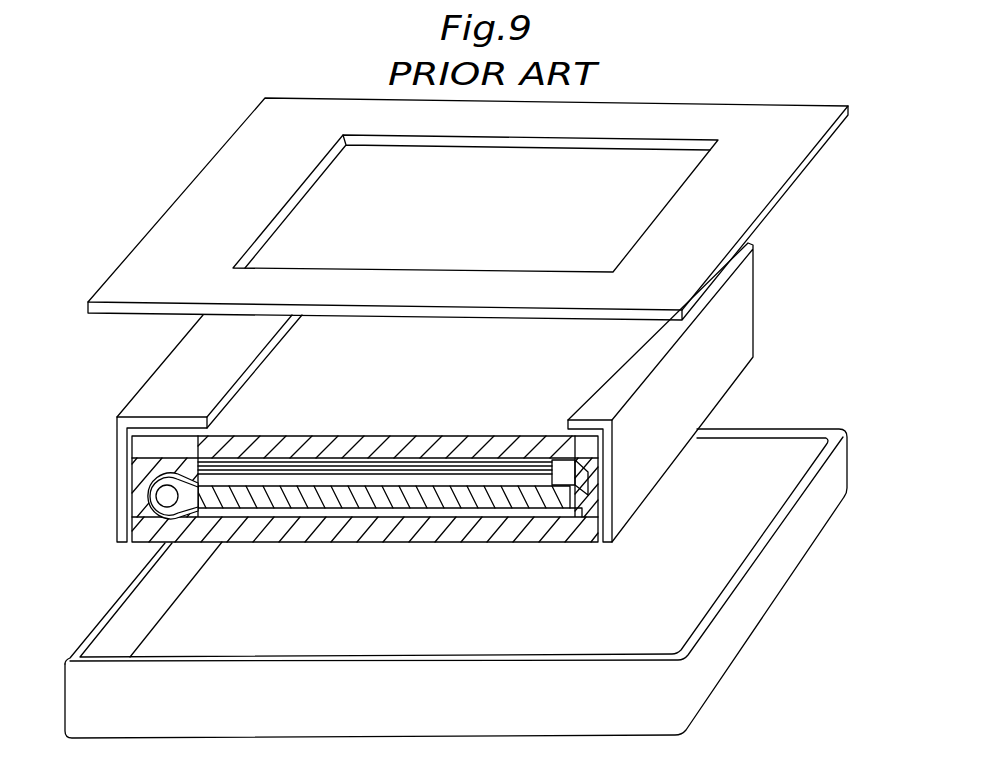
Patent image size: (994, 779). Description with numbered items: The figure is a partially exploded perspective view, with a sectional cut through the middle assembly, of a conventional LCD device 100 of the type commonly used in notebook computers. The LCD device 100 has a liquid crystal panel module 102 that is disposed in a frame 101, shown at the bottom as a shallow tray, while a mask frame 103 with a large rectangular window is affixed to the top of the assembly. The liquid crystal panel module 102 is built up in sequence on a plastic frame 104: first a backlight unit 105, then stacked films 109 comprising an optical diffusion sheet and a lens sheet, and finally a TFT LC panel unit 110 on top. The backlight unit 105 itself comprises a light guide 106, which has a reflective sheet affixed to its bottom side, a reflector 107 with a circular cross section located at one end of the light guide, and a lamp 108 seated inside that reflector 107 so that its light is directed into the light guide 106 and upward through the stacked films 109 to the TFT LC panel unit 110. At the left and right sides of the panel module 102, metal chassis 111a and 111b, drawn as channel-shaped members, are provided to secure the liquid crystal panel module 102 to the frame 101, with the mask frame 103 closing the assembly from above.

The LCD device 100 is at (750, 82).
The frame 101 is at (807, 543).
The liquid crystal panel module 102 is at (745, 345).
The mask frame 103 is at (757, 193).
The plastic frame 104 is at (588, 540).
The backlight unit 105 is at (239, 533).
The light guide 106 is at (300, 497).
The reflector 107 is at (137, 503).
The lamp 108 is at (156, 493).
The stacked films 109 is at (468, 484).
The TFT LC panel unit 110 is at (402, 395).
The metal chassis 111a is at (608, 496).
The metal chassis 111b is at (142, 423).